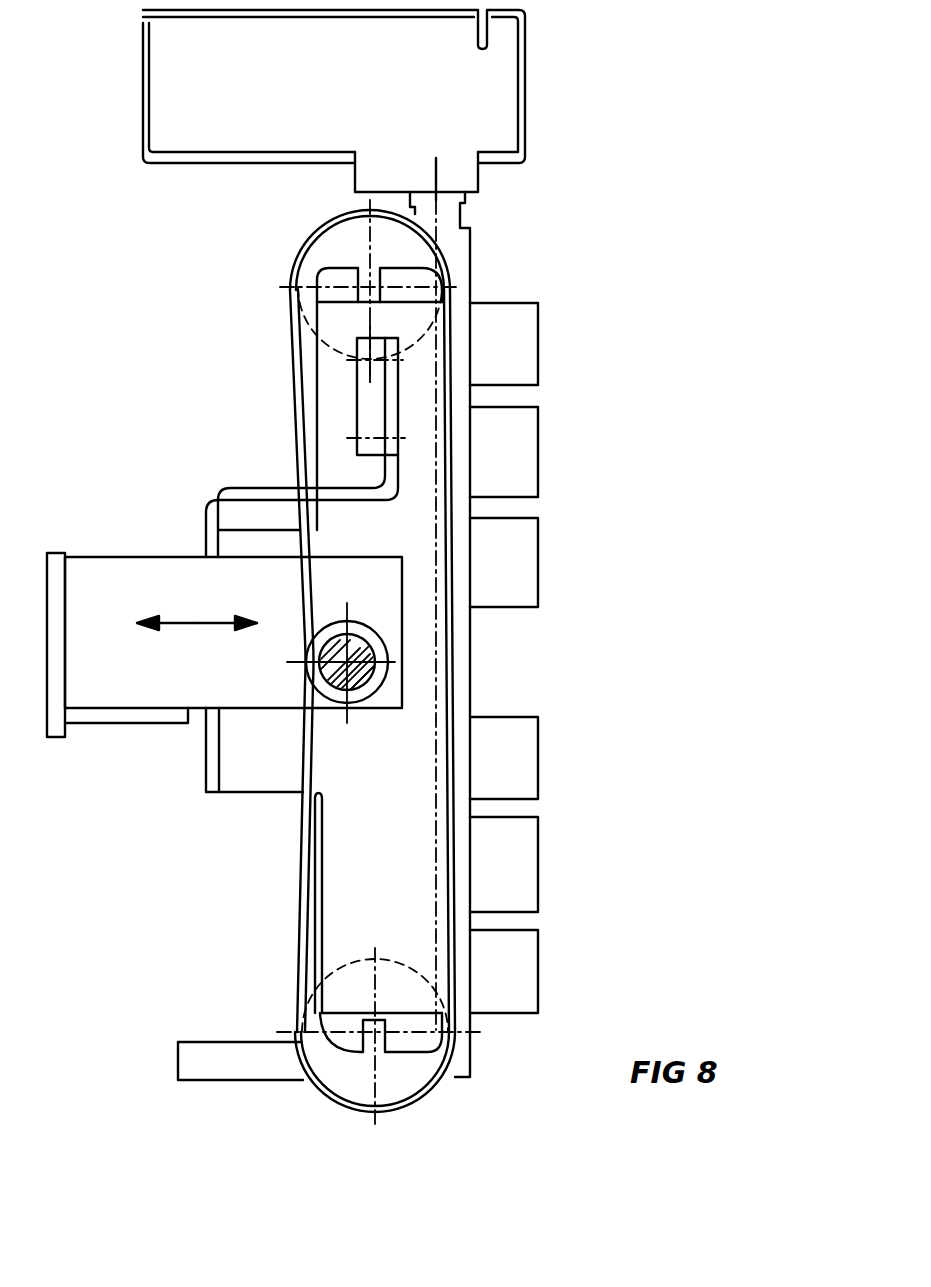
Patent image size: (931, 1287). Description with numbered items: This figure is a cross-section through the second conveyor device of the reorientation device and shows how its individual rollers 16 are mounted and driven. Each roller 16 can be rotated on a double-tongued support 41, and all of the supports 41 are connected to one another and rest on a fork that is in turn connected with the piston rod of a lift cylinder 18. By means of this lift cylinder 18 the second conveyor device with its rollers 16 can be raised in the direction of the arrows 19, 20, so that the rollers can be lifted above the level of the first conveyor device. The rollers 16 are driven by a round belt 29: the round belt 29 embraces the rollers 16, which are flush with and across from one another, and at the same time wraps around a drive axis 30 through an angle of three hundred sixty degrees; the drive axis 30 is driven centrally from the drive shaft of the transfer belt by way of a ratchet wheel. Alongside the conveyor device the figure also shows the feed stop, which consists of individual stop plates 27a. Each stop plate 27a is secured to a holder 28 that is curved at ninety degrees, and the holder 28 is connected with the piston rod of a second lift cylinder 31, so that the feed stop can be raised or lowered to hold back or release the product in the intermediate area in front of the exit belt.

The roller 16 is at (357, 1092).
The lift cylinder 18 is at (118, 722).
The arrow 19 is at (222, 630).
The arrow 20 is at (182, 630).
The stop plate 27a is at (520, 872).
The holder 28 is at (348, 490).
The round belt 29 is at (405, 1105).
The drive axis 30 is at (330, 690).
The second lift cylinder 31 is at (367, 400).
The double-tongued support 41 is at (350, 885).